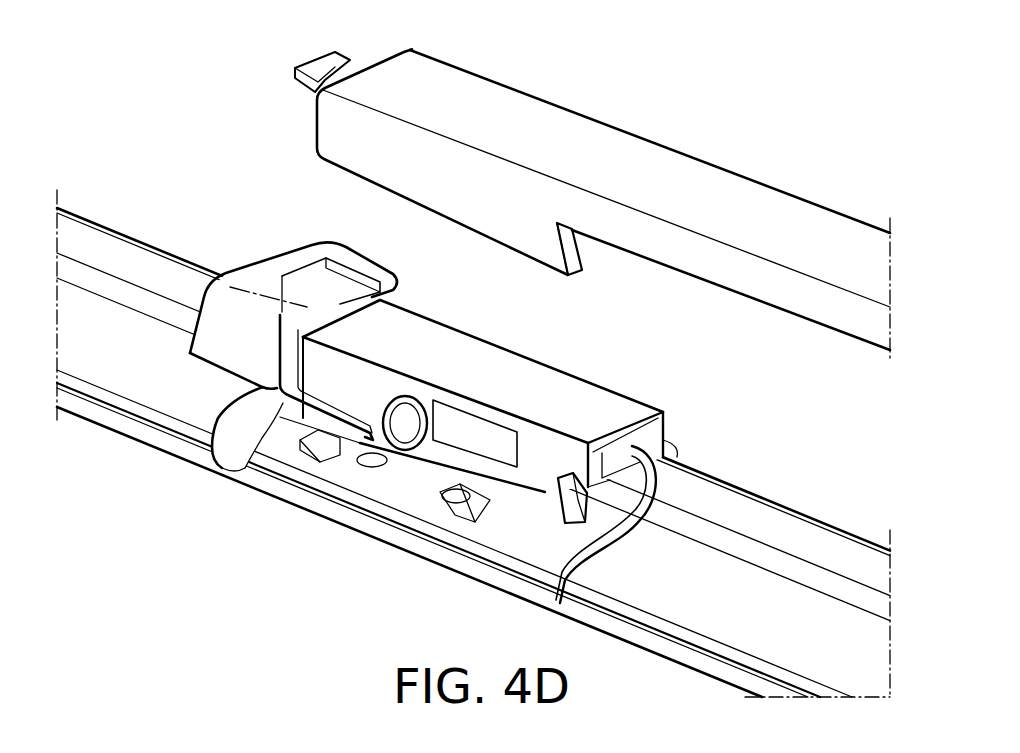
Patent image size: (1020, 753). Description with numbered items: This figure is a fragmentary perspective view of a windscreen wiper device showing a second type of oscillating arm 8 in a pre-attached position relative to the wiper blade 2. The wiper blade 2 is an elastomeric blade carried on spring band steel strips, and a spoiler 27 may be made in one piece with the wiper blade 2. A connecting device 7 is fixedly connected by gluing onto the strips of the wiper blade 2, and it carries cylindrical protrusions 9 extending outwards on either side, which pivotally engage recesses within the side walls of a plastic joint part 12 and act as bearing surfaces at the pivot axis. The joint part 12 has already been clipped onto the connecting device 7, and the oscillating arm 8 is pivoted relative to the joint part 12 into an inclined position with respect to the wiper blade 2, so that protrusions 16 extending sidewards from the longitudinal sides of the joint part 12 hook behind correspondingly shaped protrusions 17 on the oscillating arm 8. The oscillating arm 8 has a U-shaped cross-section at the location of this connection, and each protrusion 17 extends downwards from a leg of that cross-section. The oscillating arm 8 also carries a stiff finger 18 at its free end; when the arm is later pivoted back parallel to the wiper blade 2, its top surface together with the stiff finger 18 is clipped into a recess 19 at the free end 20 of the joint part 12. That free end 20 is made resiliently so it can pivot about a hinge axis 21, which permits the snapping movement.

The wiper blade 2 is at (677, 650).
The connecting device 7 is at (400, 497).
The oscillating arm 8 is at (778, 215).
The cylindrical protrusions 9 is at (395, 400).
The joint part 12 is at (490, 360).
The protrusions 16 is at (702, 456).
The protrusion 17 is at (553, 260).
The stiff finger 18 is at (320, 67).
The recess 19 is at (345, 272).
The free end 20 is at (258, 277).
The hinge axis 21 is at (245, 470).
The spoiler 27 is at (798, 530).